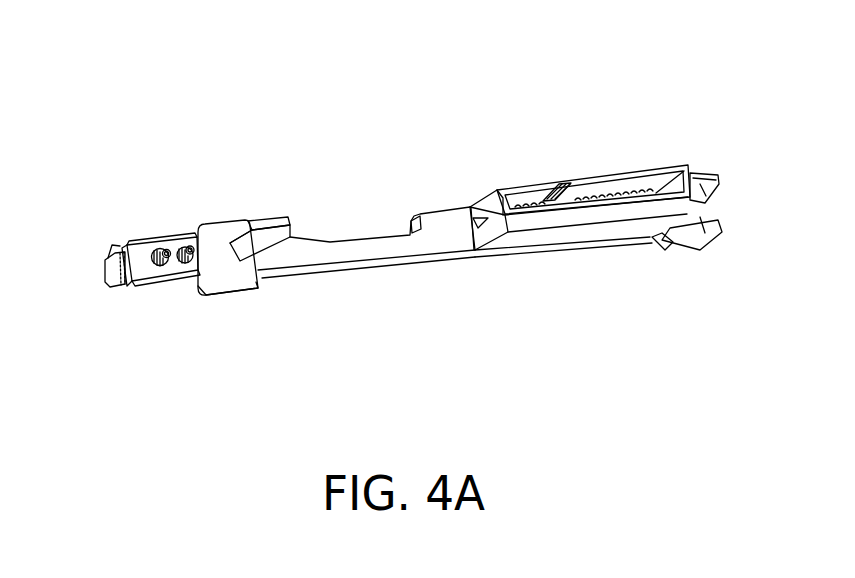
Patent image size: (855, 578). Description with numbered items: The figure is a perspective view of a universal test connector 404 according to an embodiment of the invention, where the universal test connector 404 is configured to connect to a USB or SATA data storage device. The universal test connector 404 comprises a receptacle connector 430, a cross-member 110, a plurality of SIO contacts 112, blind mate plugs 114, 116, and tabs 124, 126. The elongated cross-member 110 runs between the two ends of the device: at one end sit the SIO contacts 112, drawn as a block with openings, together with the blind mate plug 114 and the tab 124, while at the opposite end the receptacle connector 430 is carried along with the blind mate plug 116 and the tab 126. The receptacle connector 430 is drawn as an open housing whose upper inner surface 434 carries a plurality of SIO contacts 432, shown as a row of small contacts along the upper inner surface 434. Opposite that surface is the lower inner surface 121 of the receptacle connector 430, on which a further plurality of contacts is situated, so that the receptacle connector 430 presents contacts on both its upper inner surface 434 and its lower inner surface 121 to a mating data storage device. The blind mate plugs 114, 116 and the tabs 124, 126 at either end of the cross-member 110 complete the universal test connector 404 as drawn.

The universal test connector 404 is at (153, 72).
The cross-member 110 is at (352, 255).
The SIO contacts 112 is at (165, 222).
The blind mate plug 114 is at (270, 223).
The blind mate plug 116 is at (700, 175).
The lower inner surface 121 is at (472, 213).
The tab 124 is at (110, 262).
The tab 126 is at (705, 218).
The receptacle connector 430 is at (578, 232).
The SIO contacts 432 is at (546, 196).
The upper inner surface 434 is at (496, 197).